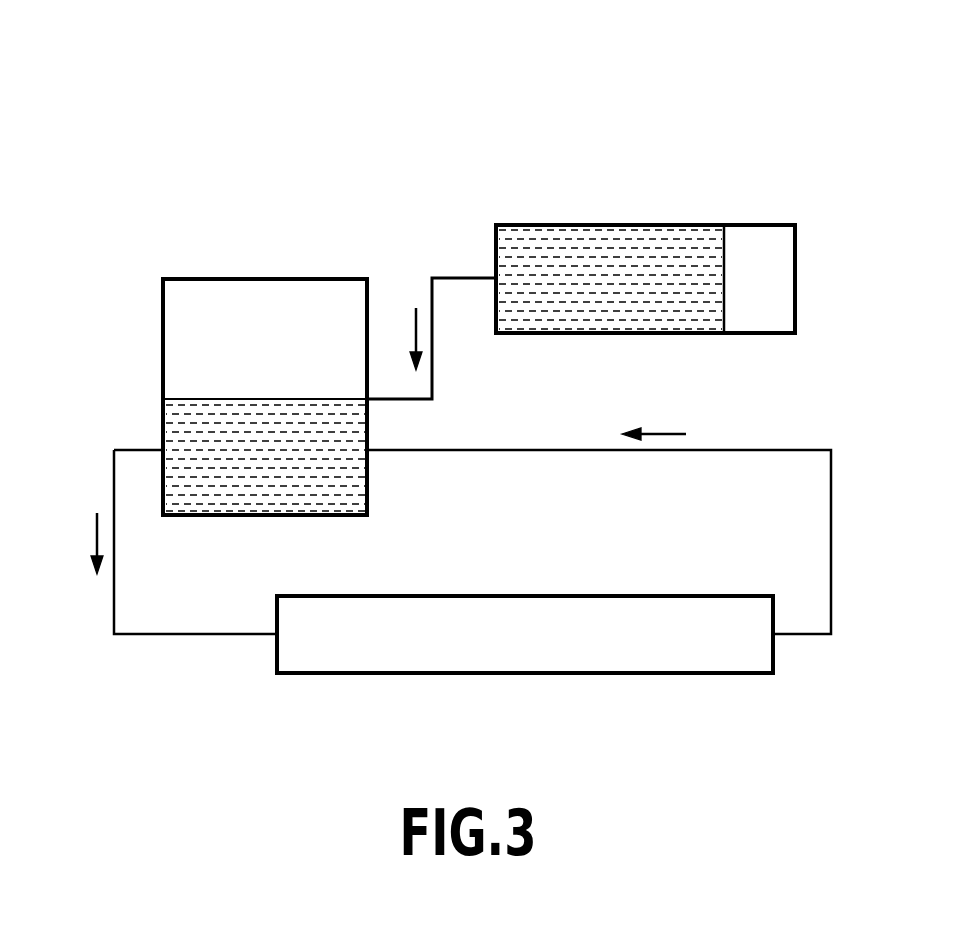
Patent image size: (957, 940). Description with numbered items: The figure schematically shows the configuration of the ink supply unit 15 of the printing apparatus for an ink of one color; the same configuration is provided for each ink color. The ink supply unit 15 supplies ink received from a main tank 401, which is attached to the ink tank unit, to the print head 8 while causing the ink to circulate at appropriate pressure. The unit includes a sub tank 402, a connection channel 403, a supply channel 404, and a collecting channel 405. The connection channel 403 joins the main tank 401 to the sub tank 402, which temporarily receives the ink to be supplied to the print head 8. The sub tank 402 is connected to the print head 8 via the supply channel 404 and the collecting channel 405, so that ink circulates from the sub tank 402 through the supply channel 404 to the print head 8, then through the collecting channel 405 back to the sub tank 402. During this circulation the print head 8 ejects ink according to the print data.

The ink supply unit 15 is at (580, 93).
The main tank 401 is at (604, 225).
The sub tank 402 is at (265, 280).
The connection channel 403 is at (452, 278).
The supply channel 404 is at (197, 635).
The collecting channel 405 is at (530, 450).
The print head 8 is at (530, 595).